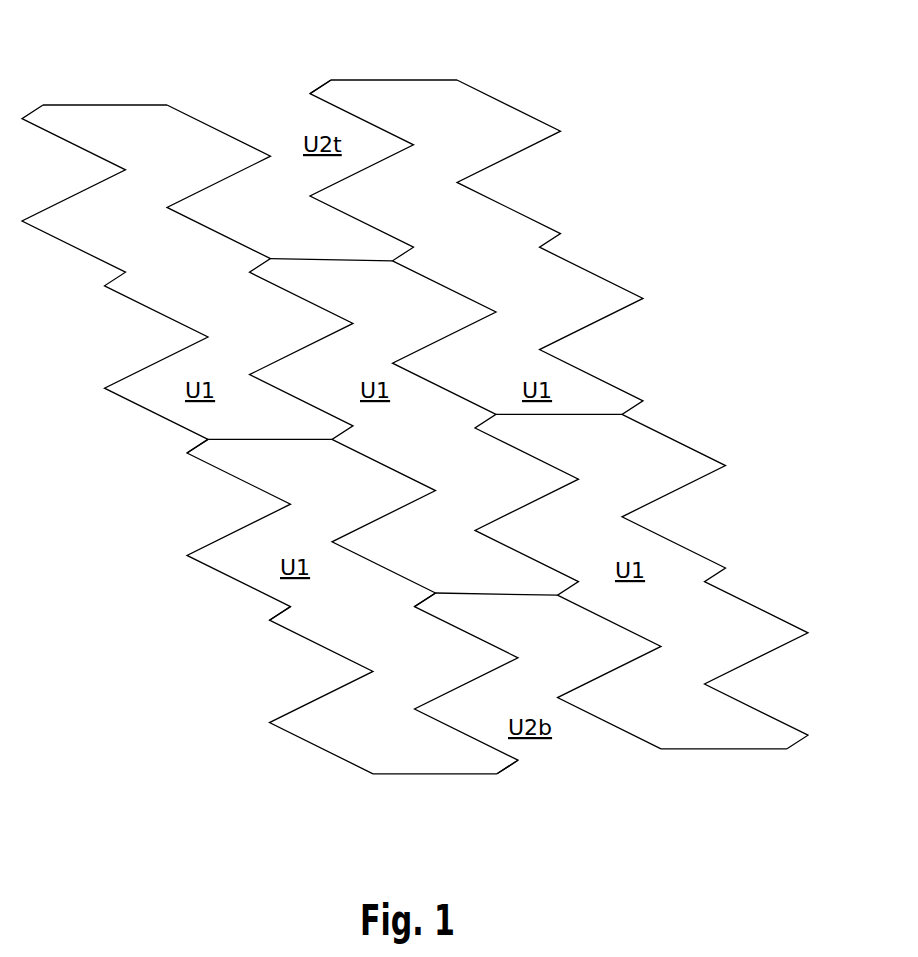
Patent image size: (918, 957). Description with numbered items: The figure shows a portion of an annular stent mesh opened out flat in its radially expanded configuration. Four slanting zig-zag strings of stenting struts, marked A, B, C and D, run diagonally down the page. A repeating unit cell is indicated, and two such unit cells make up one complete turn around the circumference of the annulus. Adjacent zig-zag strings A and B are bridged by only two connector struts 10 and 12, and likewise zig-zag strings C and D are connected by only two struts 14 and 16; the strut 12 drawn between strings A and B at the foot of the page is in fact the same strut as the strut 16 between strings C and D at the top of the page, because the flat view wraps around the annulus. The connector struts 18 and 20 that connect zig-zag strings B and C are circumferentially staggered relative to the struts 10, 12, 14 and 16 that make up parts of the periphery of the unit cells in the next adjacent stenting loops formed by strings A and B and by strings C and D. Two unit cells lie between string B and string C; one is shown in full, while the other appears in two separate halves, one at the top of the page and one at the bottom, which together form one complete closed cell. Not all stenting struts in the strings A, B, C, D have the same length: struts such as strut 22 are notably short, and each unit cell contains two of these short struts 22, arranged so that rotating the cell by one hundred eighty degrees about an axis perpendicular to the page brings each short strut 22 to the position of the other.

The connector strut 10 is at (276, 442).
The connector strut 12 is at (113, 105).
The connector strut 14 is at (568, 417).
The connector strut 16 is at (404, 80).
The connector strut 18 is at (305, 259).
The connector strut 20 is at (498, 595).
The short strut 22 is at (325, 81).
The zig-zag string A is at (114, 369).
The zig-zag string B is at (287, 351).
The zig-zag string C is at (440, 333).
The zig-zag string D is at (584, 319).